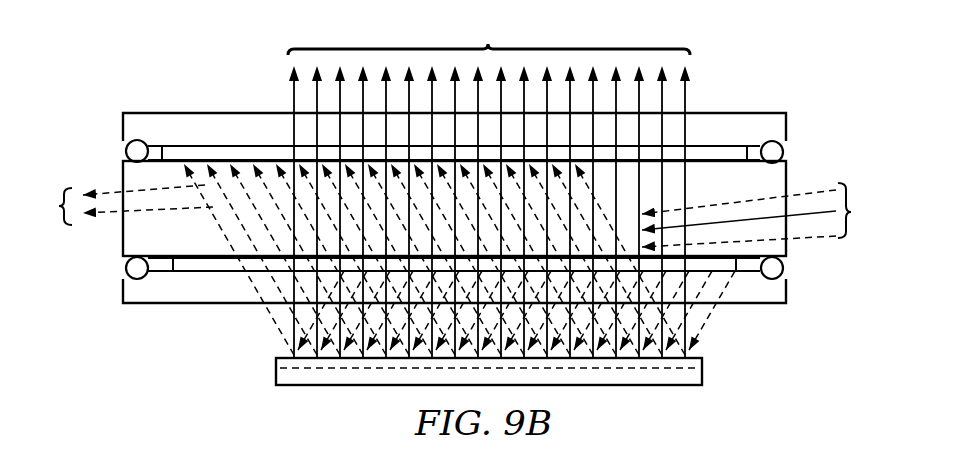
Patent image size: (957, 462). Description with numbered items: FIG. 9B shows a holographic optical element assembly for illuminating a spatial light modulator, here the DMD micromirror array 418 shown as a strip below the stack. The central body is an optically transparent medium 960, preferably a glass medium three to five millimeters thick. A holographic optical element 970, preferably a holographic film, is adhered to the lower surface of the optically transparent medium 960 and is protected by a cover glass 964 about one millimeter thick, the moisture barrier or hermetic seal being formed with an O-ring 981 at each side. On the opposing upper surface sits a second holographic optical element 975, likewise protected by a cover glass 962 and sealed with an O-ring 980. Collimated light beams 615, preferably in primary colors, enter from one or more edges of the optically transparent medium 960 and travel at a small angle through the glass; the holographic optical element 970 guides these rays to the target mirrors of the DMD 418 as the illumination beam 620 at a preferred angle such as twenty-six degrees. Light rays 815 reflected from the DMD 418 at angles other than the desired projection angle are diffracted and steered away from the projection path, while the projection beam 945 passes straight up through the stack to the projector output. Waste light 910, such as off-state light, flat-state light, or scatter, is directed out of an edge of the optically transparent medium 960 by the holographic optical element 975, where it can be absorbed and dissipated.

The projection beam 945 is at (489, 184).
The cover glass 962 is at (240, 113).
The holographic optical element 975 is at (717, 153).
The O-ring 980 is at (126, 153).
The optically transparent medium 960 is at (122, 237).
The waste light 910 is at (114, 205).
The collimated light beams 615 is at (772, 215).
The holographic optical element 970 is at (193, 266).
The O-ring 981 is at (125, 265).
The cover glass 964 is at (122, 293).
The light rays 815 is at (278, 328).
The illumination beam 620 is at (701, 317).
The DMD 418 is at (703, 373).